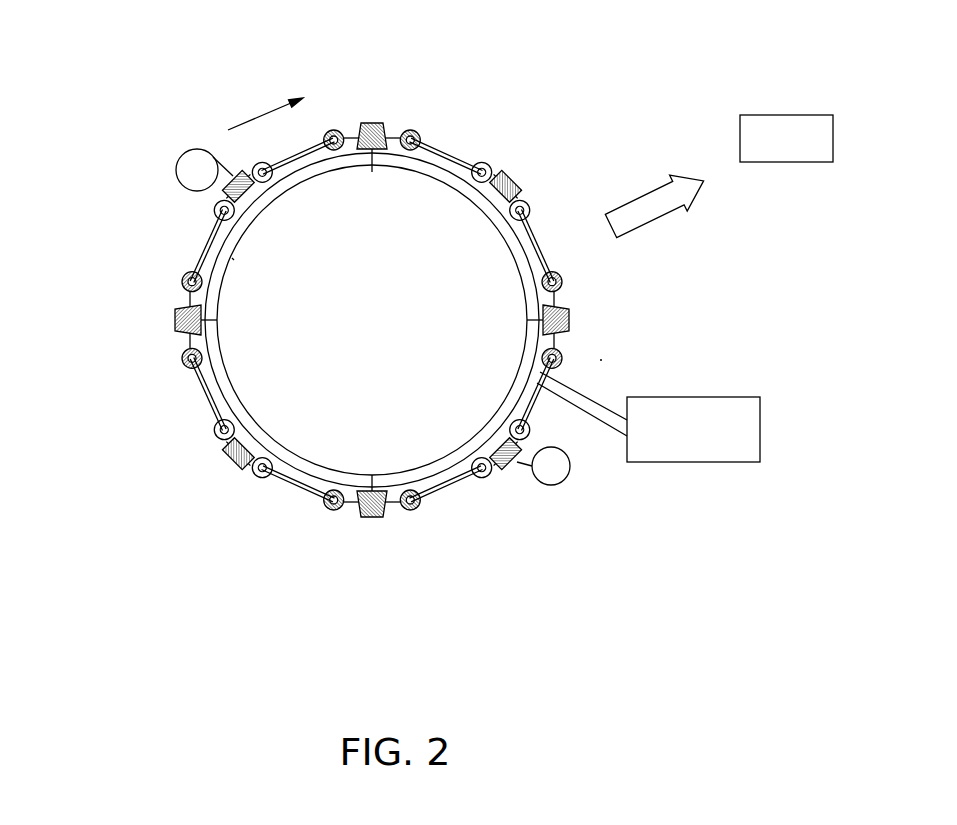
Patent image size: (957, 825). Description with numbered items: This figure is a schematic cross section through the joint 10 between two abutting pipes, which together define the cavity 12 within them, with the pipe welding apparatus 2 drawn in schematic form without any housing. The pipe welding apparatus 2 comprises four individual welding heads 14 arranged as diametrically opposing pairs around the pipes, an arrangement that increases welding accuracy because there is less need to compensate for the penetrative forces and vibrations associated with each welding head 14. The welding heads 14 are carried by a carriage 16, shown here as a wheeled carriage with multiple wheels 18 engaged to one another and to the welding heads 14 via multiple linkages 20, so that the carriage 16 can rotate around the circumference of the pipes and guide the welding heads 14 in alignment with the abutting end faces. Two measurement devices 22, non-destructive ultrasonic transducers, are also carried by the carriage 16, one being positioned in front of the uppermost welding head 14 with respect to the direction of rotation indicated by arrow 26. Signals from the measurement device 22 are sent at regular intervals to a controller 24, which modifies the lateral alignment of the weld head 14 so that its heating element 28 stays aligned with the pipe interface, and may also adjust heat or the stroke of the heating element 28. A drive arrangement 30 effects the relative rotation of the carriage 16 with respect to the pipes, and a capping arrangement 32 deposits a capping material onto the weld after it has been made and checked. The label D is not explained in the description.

The pipe welding apparatus 2 is at (612, 360).
The joint 10 is at (517, 238).
The cavity 12 is at (414, 207).
The welding head 14 is at (378, 121).
The carriage 16 is at (464, 515).
The wheels 18 is at (412, 510).
The linkages 20 is at (208, 398).
The measurement device 22 is at (516, 180).
The controller 24 is at (719, 176).
The arrow 26 is at (258, 110).
The heating element 28 is at (358, 156).
The drive arrangement 30 is at (648, 417).
The capping arrangement 32 is at (160, 150).
The pipe diameter D is at (236, 261).